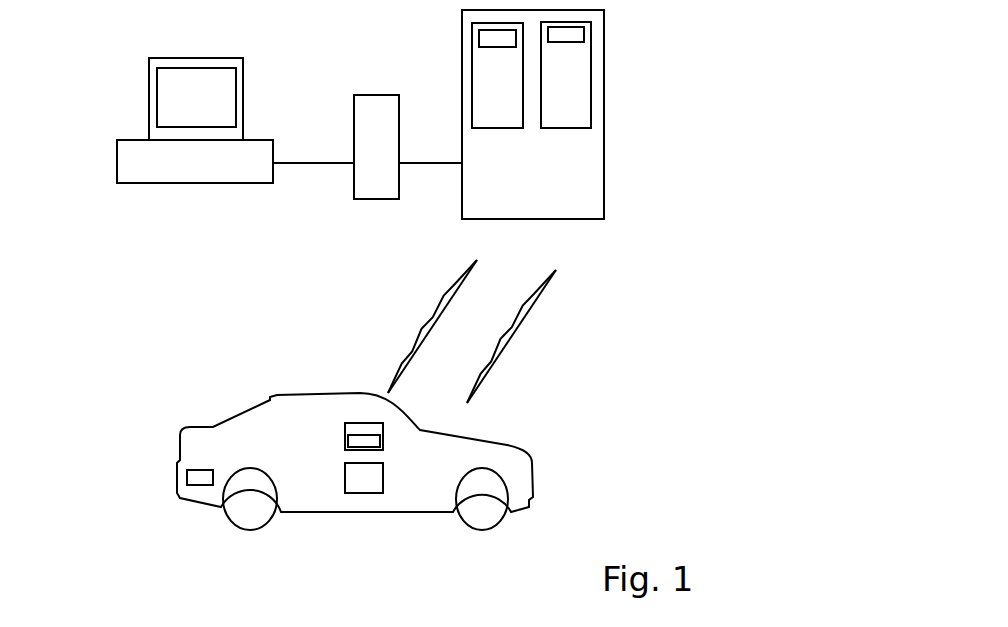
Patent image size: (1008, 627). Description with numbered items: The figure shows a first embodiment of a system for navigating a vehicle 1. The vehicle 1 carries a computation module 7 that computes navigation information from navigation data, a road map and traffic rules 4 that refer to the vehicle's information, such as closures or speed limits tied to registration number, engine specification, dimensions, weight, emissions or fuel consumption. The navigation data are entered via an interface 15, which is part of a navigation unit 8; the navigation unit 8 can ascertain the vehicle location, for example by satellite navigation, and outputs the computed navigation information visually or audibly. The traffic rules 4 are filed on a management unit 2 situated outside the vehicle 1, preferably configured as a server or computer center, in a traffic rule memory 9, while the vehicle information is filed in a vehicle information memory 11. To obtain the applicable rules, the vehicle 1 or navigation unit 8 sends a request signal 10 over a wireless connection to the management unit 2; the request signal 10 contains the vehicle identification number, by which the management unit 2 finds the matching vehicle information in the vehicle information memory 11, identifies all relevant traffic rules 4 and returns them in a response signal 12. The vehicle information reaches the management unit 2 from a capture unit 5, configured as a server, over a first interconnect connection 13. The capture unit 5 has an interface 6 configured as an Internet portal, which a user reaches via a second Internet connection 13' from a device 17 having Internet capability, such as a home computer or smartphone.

The vehicle 1 is at (207, 427).
The management unit 2 is at (604, 187).
The traffic rules 4 is at (591, 32).
The capture unit 5 is at (361, 95).
The interface 6 is at (180, 94).
The computation module 7 is at (345, 475).
The navigation unit 8 is at (377, 423).
The traffic rule memory 9 is at (591, 102).
The request signal 10 is at (442, 297).
The vehicle information memory 11 is at (472, 68).
The response signal 12 is at (522, 320).
The first interconnect connection 13 is at (430, 121).
The second Internet connection 13' is at (313, 120).
The interface 15 is at (353, 435).
The device having Internet capability 17 is at (113, 162).